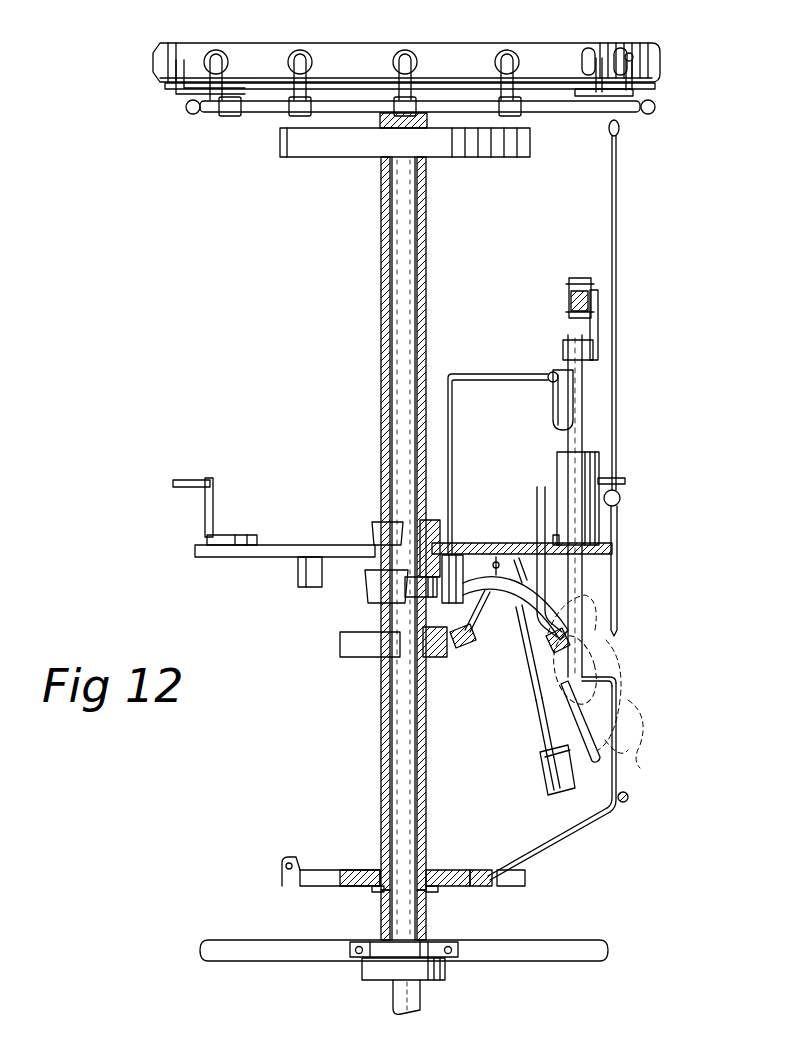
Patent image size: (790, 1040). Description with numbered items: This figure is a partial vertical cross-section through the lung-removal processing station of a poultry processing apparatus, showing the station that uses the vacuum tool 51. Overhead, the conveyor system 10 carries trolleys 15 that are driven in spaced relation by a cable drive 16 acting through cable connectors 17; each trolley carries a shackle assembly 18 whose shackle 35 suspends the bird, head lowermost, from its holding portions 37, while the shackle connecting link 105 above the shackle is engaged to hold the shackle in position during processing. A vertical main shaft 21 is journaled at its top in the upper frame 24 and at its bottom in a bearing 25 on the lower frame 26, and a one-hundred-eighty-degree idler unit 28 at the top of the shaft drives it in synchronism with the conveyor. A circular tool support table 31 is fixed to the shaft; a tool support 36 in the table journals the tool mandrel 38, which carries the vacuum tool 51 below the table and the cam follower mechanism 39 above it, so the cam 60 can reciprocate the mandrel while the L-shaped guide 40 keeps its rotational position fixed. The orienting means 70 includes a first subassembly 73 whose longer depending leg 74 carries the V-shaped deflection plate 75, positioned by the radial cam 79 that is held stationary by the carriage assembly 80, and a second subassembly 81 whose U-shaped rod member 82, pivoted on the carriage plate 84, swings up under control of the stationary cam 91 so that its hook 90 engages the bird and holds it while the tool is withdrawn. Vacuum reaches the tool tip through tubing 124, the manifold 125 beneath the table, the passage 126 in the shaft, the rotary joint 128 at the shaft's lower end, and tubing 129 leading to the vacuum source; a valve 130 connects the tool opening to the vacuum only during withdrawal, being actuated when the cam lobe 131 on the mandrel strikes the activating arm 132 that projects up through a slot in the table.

The conveyor system 10 is at (622, 52).
The trolley 15 is at (513, 62).
The cable drive 16 is at (557, 107).
The cable connector 17 is at (412, 106).
The shackle assembly 18 is at (462, 641).
The main shaft 21 is at (423, 918).
The upper frame 24 is at (470, 148).
The bearing 25 is at (435, 943).
The lower frame 26 is at (527, 921).
The idler unit 28 is at (560, 44).
The tool support table 31 is at (352, 528).
The shackle 35 is at (613, 508).
The tool support 36 is at (560, 466).
The holding portion 37 is at (617, 632).
The tool mandrel 38 is at (573, 437).
The cam follower mechanism 39 is at (598, 335).
The upstanding guide 40 is at (537, 501).
The vacuum tool 51 is at (573, 715).
The cam 60 is at (568, 302).
The orienting means 70 is at (647, 680).
The first subassembly 73 is at (525, 682).
The longer depending leg 74 is at (543, 750).
The deflection plate 75 is at (557, 773).
The radial cam 79 is at (348, 642).
The carriage assembly 80 is at (435, 842).
The second subassembly 81 is at (530, 870).
The rod member 82 is at (597, 828).
The carriage plate 84 is at (482, 862).
The hook 90 is at (603, 673).
The stationary cam 91 is at (629, 798).
The shackle connecting link 105 is at (617, 213).
The tubing 124 is at (520, 605).
The manifold 125 is at (368, 595).
The passage 126 is at (400, 910).
The rotary joint 128 is at (447, 970).
The tubing 129 is at (415, 1005).
The valve 130 is at (457, 553).
The cam lobe 131 is at (557, 403).
The activating arm 132 is at (537, 361).